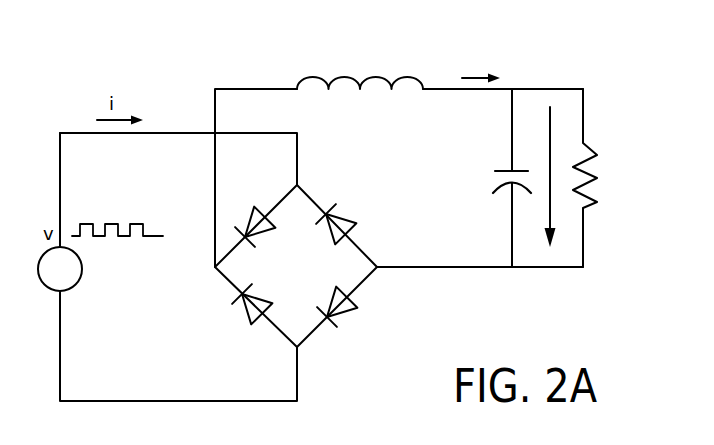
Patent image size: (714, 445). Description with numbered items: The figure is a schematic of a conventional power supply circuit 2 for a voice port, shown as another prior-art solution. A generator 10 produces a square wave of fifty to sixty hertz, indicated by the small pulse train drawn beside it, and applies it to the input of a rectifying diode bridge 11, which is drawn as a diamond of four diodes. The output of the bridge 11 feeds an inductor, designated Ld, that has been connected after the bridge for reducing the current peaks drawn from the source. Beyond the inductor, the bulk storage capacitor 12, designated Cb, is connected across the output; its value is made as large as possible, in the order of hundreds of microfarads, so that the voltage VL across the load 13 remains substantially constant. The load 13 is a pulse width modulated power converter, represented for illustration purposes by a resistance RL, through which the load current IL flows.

The power supply circuit 2 is at (192, 68).
The generator 10 is at (77, 283).
The rectifying diode bridge 11 is at (310, 273).
The bulk storage capacitor 12 is at (495, 177).
The load 13 is at (597, 158).